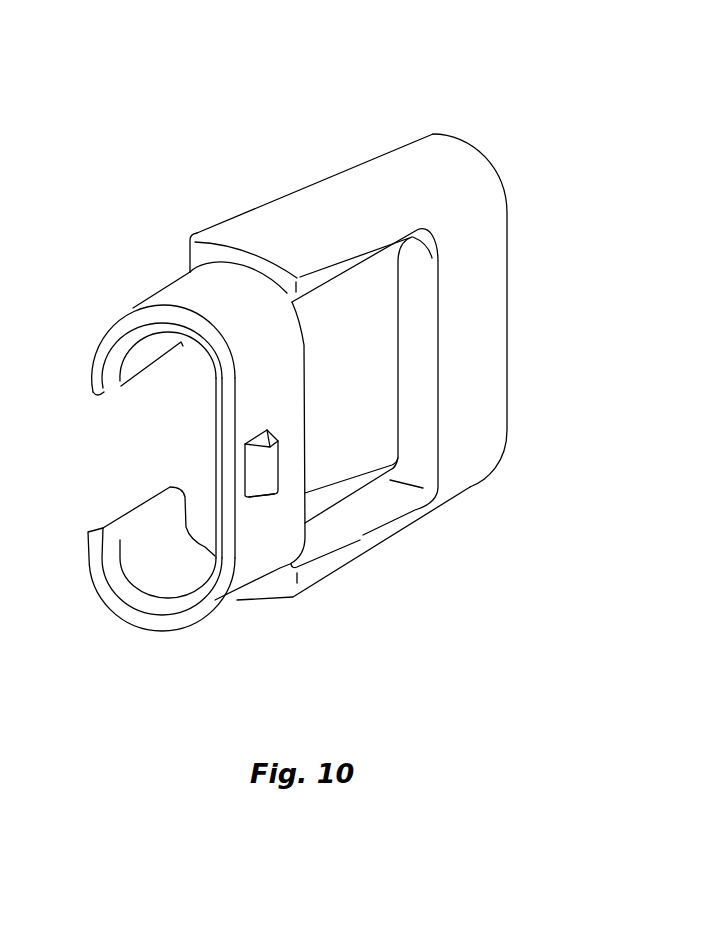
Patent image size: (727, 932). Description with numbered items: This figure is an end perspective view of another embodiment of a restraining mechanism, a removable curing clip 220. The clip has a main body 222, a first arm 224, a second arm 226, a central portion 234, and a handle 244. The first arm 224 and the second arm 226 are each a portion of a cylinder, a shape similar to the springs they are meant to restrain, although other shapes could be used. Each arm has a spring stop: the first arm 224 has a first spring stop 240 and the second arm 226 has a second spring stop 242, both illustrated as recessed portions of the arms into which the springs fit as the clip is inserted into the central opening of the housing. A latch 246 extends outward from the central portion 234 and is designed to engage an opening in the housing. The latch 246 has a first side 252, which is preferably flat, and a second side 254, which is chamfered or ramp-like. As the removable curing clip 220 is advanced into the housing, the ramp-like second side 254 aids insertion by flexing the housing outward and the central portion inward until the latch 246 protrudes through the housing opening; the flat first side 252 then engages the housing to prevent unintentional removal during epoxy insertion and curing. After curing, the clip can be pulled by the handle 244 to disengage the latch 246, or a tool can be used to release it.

The removable curing clip 220 is at (474, 91).
The main body 222 is at (238, 202).
The first arm 224 is at (135, 307).
The second arm 226 is at (167, 632).
The central portion 234 is at (217, 463).
The first spring stop 240 is at (113, 365).
The second spring stop 242 is at (120, 581).
The handle 244 is at (508, 398).
The latch 246 is at (268, 497).
The first side 252 is at (282, 458).
The second side 254 is at (259, 480).